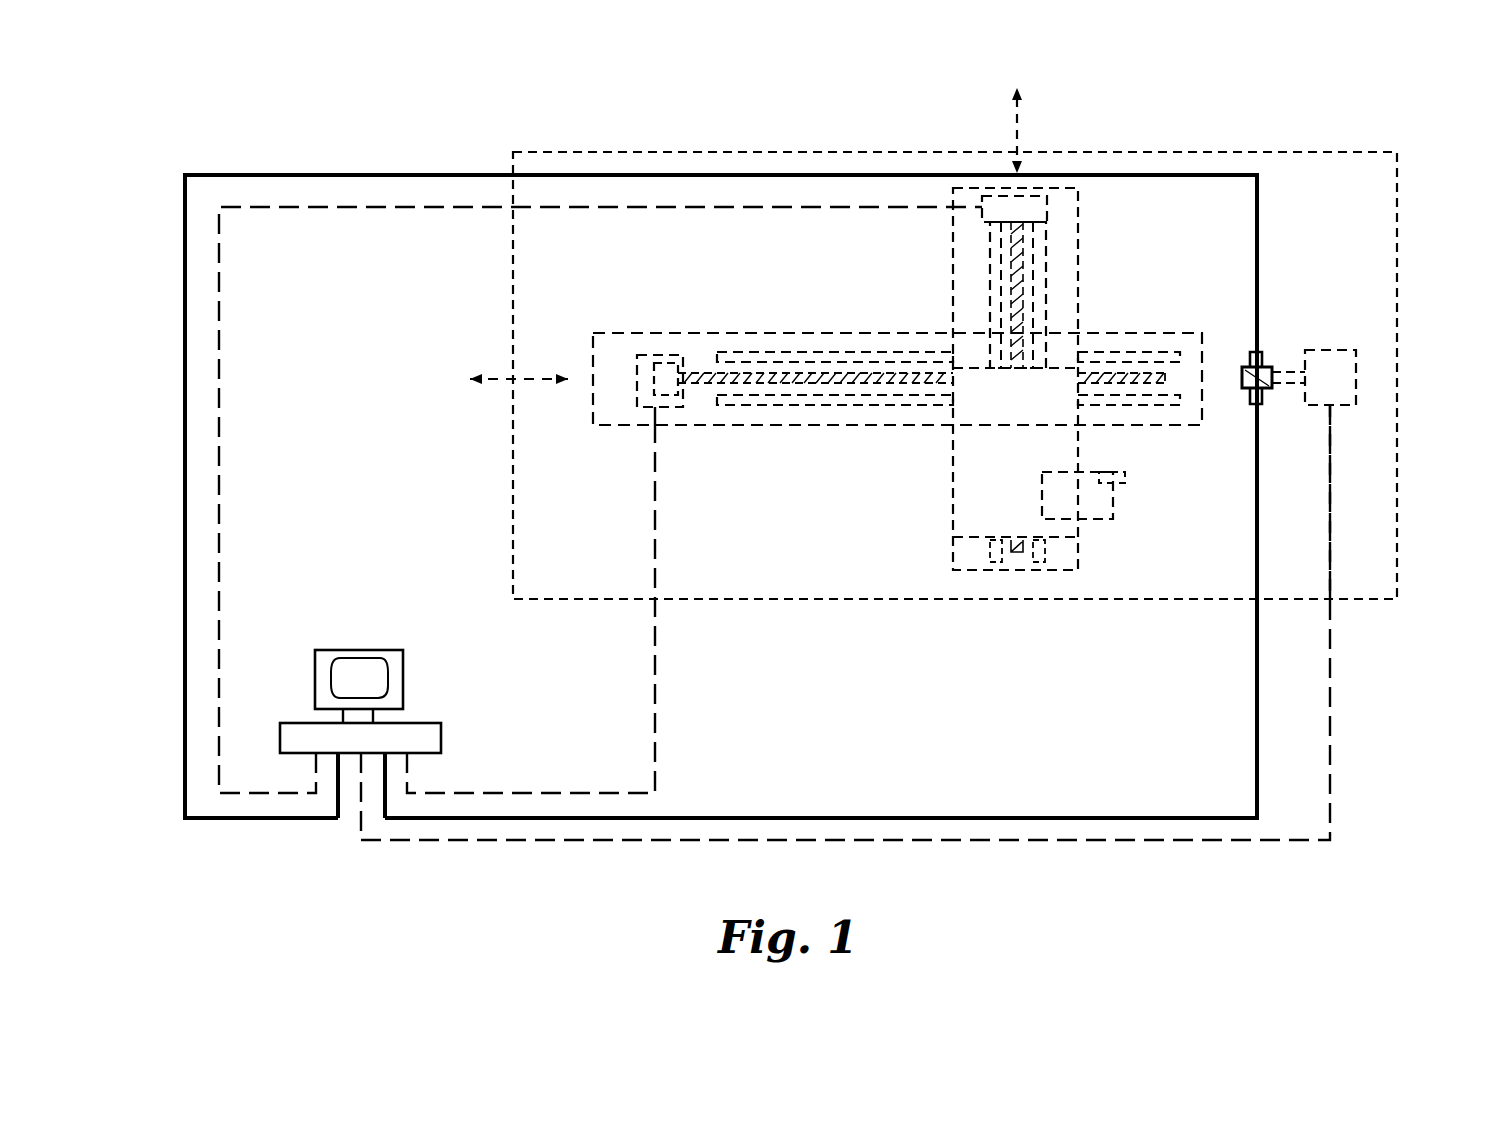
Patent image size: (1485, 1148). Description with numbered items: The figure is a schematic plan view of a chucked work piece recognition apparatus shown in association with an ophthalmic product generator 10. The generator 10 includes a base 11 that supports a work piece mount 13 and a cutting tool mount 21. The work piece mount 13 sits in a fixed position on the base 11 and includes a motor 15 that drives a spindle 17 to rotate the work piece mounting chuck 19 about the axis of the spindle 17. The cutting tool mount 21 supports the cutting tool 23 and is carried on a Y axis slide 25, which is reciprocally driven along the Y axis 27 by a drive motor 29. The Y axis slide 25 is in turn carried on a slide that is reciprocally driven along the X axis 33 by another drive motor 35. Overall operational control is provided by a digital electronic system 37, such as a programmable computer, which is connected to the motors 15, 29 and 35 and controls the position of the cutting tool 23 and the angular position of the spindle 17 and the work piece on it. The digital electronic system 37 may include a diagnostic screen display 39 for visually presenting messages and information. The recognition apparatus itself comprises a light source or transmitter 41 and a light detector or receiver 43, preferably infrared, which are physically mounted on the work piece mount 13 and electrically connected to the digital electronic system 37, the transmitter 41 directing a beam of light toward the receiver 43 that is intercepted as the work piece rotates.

The ophthalmic product generator 10 is at (508, 149).
The base 11 is at (1153, 152).
The work piece mount 13 is at (1362, 378).
The motor 15 is at (1345, 398).
The spindle 17 is at (1288, 372).
The work piece mounting chuck 19 is at (1265, 405).
The cutting tool mount 21 is at (1093, 508).
The cutting tool 23 is at (1125, 478).
The Y axis slide 25 is at (1078, 265).
The Y axis 27 is at (1015, 128).
The drive motor 29 is at (1033, 211).
The X axis 33 is at (505, 378).
The drive motor 35 is at (648, 362).
The digital electronic system 37 is at (415, 740).
The diagnostic screen display 39 is at (372, 682).
The light source or transmitter 41 is at (1268, 368).
The light detector or receiver 43 is at (1245, 390).